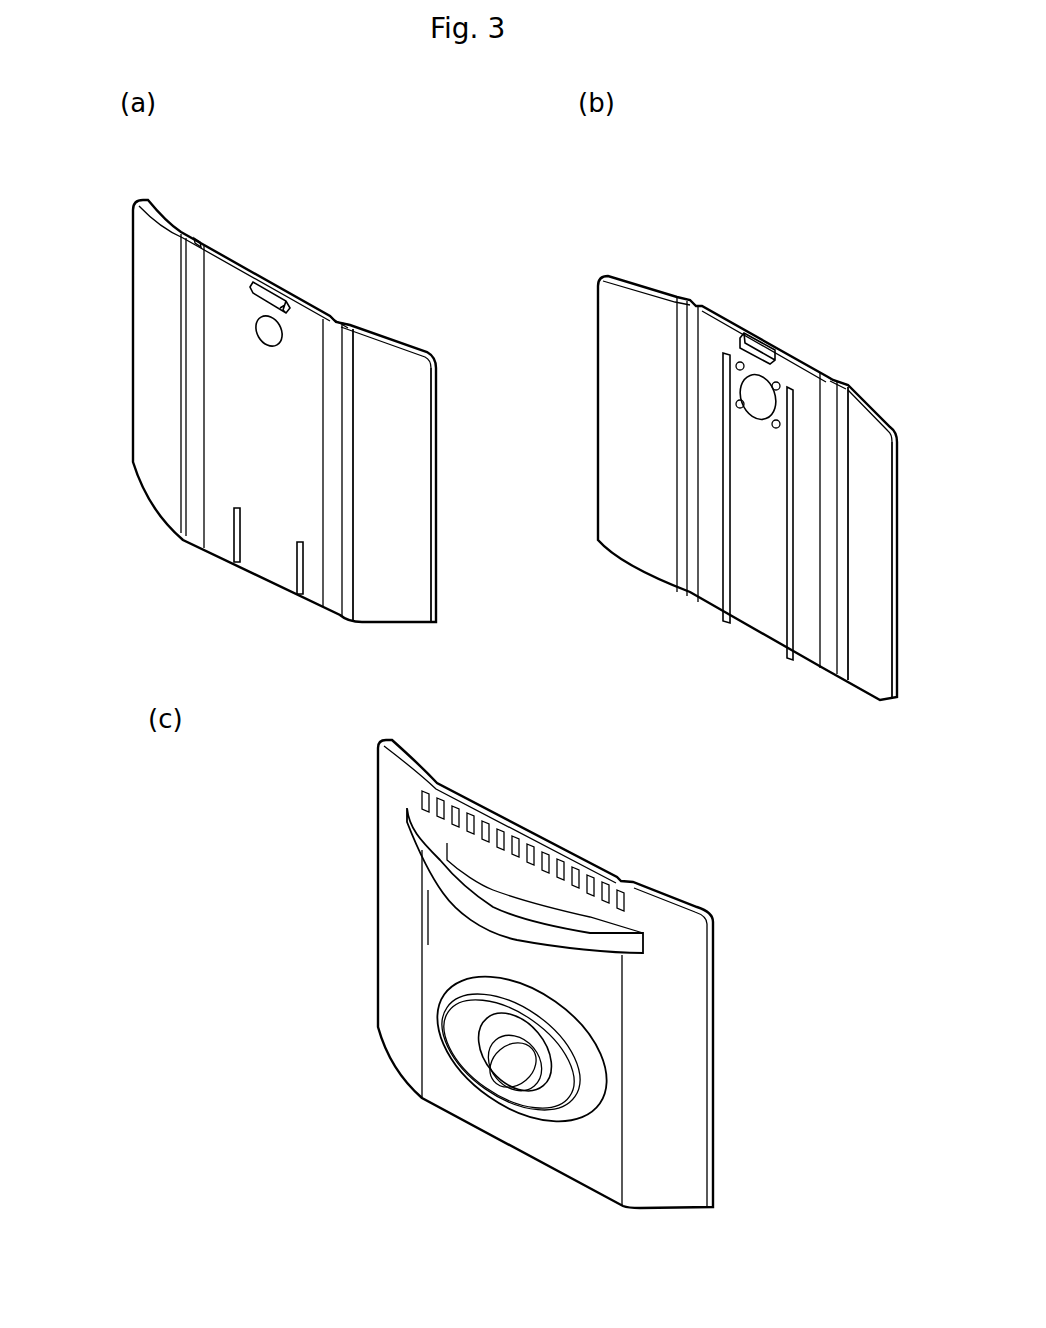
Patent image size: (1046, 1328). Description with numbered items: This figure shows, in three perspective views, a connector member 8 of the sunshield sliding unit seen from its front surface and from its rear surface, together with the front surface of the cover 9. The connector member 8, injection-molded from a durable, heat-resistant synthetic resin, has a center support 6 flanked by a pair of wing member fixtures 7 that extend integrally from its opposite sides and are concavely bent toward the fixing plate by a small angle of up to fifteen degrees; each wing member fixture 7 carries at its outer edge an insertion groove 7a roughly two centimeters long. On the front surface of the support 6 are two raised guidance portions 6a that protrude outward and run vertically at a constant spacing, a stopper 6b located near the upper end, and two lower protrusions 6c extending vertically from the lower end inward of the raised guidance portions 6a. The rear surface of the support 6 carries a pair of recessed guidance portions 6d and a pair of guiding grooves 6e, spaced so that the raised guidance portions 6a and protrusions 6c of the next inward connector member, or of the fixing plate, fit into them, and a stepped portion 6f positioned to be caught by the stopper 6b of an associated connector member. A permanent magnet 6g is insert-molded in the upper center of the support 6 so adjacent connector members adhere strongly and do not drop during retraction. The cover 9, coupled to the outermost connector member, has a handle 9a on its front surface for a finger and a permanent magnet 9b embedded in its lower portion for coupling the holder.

In FIG. 3a, the connector member 8 is at (128, 222).
In FIG. 3b, the connector member 8 is at (595, 289).
In FIG. 3a, the center support 6 is at (303, 426).
In FIG. 3a, the raised guidance portions 6a is at (333, 364).
In FIG. 3b, the raised guidance portions 6a is at (838, 378).
In FIG. 3a, the stopper 6b is at (272, 300).
In FIG. 3a, the lower protrusions 6c is at (302, 568).
In FIG. 3a, the recessed guidance portions 6d is at (202, 243).
In FIG. 3b, the recessed guidance portions 6d is at (830, 428).
In FIG. 3b, the guiding grooves 6e is at (792, 640).
In FIG. 3b, the stepped portion 6f is at (758, 357).
In FIG. 3a, the permanent magnet 6g is at (277, 335).
In FIG. 3b, the permanent magnet 6g is at (753, 398).
In FIG. 3a, the wing member fixtures 7 is at (417, 548).
In FIG. 3b, the wing member fixtures 7 is at (868, 558).
In FIG. 3a, the insertion grooves 7a is at (437, 474).
In FIG. 3b, the insertion grooves 7a is at (898, 489).
In FIG. 3c, the cover 9 is at (385, 797).
In FIG. 3c, the handle 9a is at (440, 872).
In FIG. 3c, the permanent magnet 9b is at (508, 1072).